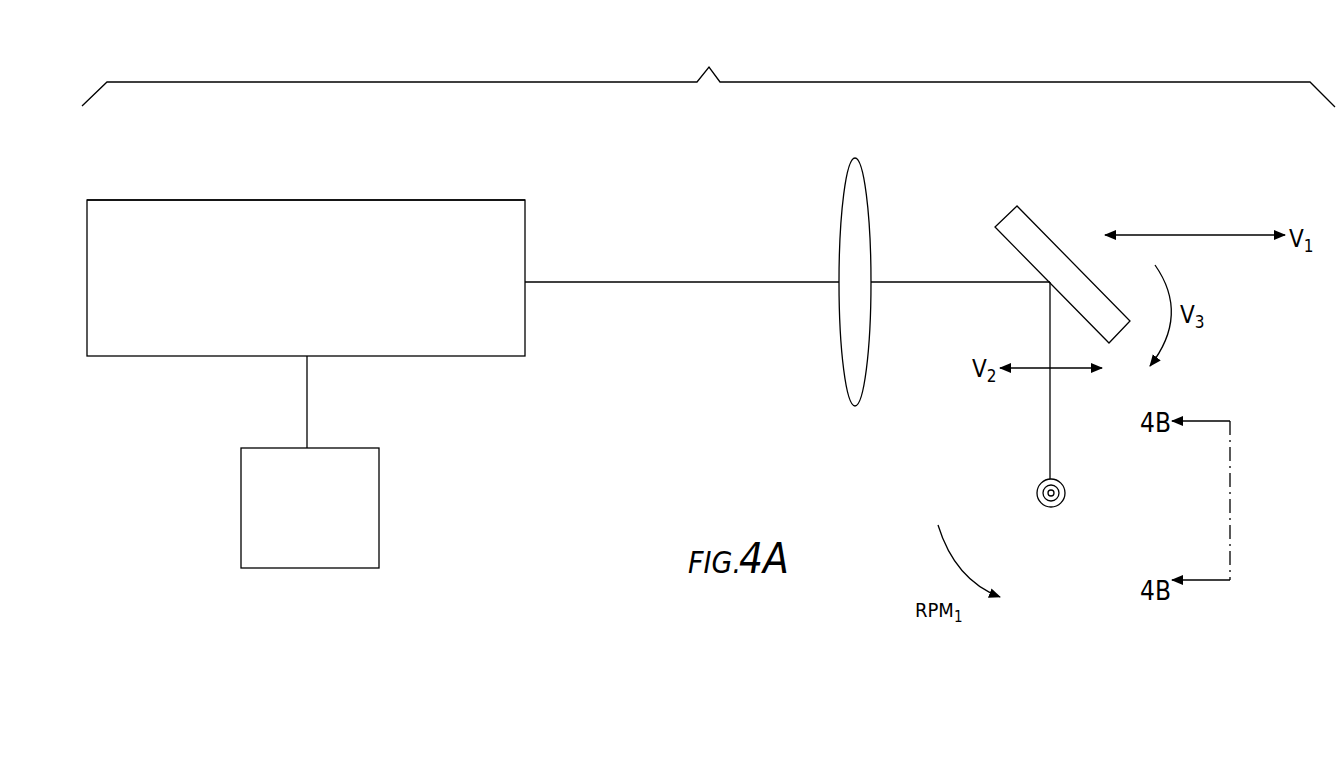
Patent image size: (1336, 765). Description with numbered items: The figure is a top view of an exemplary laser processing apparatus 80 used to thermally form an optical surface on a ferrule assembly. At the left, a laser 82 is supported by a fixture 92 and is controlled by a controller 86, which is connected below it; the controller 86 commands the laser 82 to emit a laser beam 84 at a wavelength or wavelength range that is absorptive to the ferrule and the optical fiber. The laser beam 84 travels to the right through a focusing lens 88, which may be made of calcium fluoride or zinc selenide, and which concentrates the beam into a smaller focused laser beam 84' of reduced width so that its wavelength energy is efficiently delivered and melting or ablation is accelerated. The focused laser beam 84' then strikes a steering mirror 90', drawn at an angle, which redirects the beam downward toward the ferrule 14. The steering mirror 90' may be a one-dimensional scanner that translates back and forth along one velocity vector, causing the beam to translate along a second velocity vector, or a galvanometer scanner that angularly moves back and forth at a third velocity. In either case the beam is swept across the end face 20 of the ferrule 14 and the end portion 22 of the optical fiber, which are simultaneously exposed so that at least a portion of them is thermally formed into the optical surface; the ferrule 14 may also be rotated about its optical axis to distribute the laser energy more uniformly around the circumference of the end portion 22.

The laser processing apparatus 80 is at (708, 72).
The laser 82 is at (306, 278).
The controller 86 is at (310, 462).
The fixture 92 is at (258, 200).
The laser beam 84 is at (682, 248).
The focusing lens 88 is at (866, 178).
The focused laser beam 84' is at (960, 346).
The steering mirror 90' is at (1062, 255).
The ferrule 14 is at (996, 471).
The end face 20 is at (993, 499).
The end portion 22 is at (1041, 484).